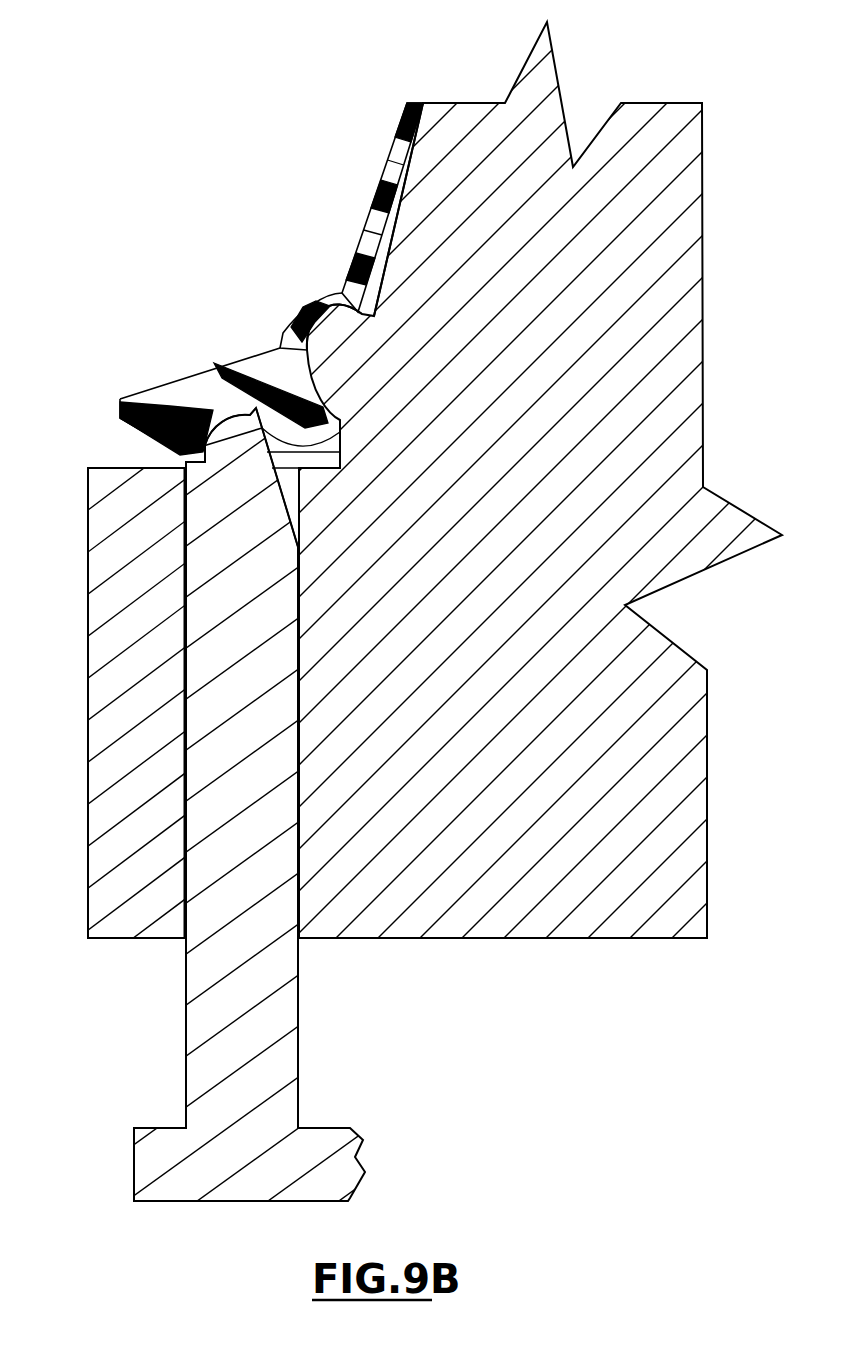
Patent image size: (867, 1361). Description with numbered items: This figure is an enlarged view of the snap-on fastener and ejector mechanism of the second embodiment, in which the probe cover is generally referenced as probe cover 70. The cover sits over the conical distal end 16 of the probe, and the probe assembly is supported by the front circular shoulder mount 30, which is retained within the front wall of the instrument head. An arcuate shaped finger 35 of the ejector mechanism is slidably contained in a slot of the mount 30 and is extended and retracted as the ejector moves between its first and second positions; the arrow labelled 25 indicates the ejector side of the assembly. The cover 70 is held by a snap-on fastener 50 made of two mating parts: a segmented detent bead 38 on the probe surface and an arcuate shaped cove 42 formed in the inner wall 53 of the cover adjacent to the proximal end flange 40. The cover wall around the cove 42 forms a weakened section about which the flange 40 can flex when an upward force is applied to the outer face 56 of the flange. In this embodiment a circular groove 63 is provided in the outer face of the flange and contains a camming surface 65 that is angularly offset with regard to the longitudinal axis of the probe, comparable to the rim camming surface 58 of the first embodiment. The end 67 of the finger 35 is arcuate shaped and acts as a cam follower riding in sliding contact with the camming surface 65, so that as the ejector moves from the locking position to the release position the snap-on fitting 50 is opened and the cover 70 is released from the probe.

The distal end of the probe 16 is at (684, 284).
The valve member 25 is at (226, 1210).
The front circular shoulder mount 30 is at (92, 714).
The arcuate shaped finger 35 is at (290, 1061).
The detent bead 38 is at (336, 364).
The proximal end flange 40 is at (165, 393).
The arcuate shaped cove 42 is at (287, 346).
The snap-on fastener 50 is at (323, 285).
The inner wall of the cover 53 is at (403, 232).
The outer face of the flange 56 is at (296, 472).
The camming surface 58 is at (128, 438).
The circular groove 63 is at (250, 362).
The camming surface 65 is at (120, 404).
The end of ejector mechanism finger 67 is at (210, 443).
The probe cover 70 is at (392, 120).